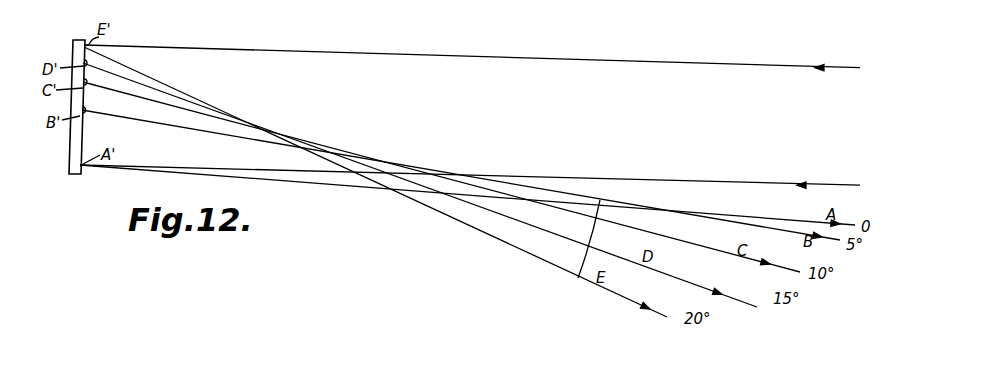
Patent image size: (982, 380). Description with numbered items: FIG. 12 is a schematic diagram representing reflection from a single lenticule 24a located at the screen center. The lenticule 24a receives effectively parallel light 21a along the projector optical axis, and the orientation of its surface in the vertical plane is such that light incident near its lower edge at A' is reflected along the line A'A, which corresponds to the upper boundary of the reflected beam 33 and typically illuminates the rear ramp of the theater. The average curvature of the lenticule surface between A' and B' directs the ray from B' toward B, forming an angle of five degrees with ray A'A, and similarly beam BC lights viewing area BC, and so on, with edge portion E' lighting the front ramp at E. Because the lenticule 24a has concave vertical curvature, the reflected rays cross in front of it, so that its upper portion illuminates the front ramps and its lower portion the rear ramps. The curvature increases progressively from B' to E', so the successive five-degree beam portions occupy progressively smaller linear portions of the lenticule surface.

The parallel light 21a is at (870, 192).
The lenticule 24a is at (81, 138).
The reflected beam 33 is at (584, 266).